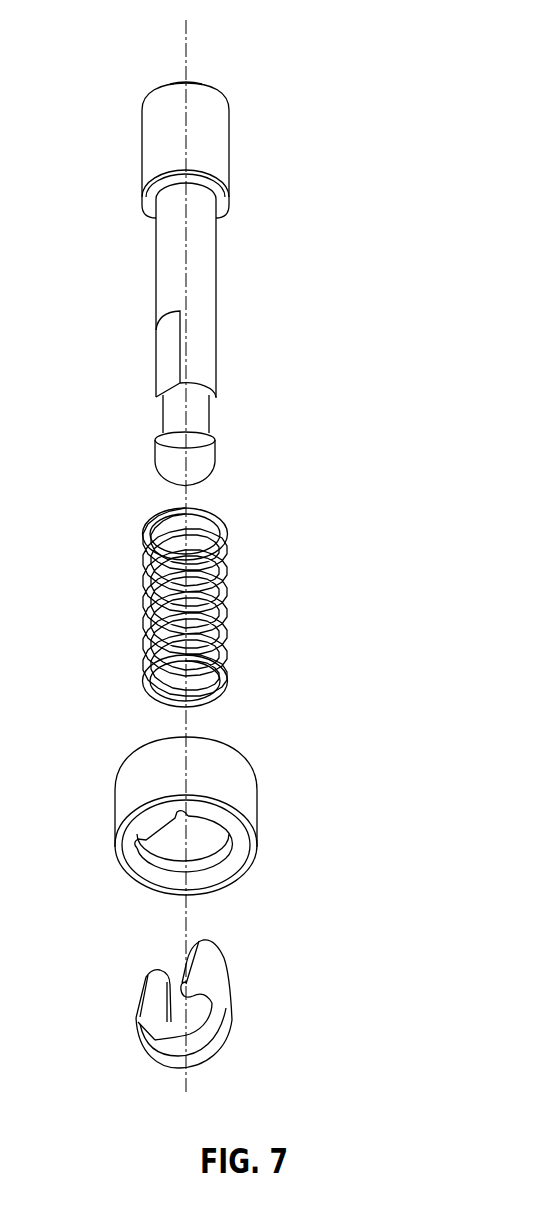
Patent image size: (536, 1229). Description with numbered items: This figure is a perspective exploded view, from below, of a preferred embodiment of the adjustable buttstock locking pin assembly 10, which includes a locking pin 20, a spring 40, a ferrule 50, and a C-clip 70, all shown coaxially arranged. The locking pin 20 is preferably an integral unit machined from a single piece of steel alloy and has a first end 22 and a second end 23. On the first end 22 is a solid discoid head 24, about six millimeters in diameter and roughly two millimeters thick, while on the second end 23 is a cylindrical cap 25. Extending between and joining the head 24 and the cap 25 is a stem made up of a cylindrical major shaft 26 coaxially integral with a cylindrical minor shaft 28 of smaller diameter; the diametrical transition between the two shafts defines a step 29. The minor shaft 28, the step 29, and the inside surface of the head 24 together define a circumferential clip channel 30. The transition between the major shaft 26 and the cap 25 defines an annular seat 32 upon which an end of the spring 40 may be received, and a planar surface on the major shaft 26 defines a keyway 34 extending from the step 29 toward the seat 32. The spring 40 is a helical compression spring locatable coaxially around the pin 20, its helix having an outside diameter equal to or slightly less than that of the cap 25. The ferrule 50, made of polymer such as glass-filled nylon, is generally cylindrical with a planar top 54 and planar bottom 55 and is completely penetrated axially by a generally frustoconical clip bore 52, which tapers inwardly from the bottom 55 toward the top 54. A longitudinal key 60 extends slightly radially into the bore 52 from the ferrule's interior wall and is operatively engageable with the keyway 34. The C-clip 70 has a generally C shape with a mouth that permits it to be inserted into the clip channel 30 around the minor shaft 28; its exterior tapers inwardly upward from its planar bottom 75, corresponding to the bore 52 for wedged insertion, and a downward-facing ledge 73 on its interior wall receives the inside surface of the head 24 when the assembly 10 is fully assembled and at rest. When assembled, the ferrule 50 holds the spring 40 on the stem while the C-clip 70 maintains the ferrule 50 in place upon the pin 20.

The locking pin assembly 10 is at (372, 80).
The locking pin 20 is at (241, 259).
The first end 22 is at (200, 468).
The second end 23 is at (197, 82).
The head 24 is at (155, 452).
The cap 25 is at (153, 130).
The major shaft 26 is at (167, 242).
The minor shaft 28 is at (208, 430).
The step 29 is at (208, 400).
The clip channel 30 is at (175, 415).
The annular seat 32 is at (217, 200).
The keyway 34 is at (167, 363).
The spring 40 is at (247, 571).
The ferrule 50 is at (271, 801).
The clip bore 52 is at (213, 842).
The top 54 is at (138, 748).
The bottom 55 is at (153, 882).
The key 60 is at (157, 832).
The C-clip 70 is at (247, 1003).
The ledge 73 is at (160, 1030).
The bottom 75 is at (210, 1048).